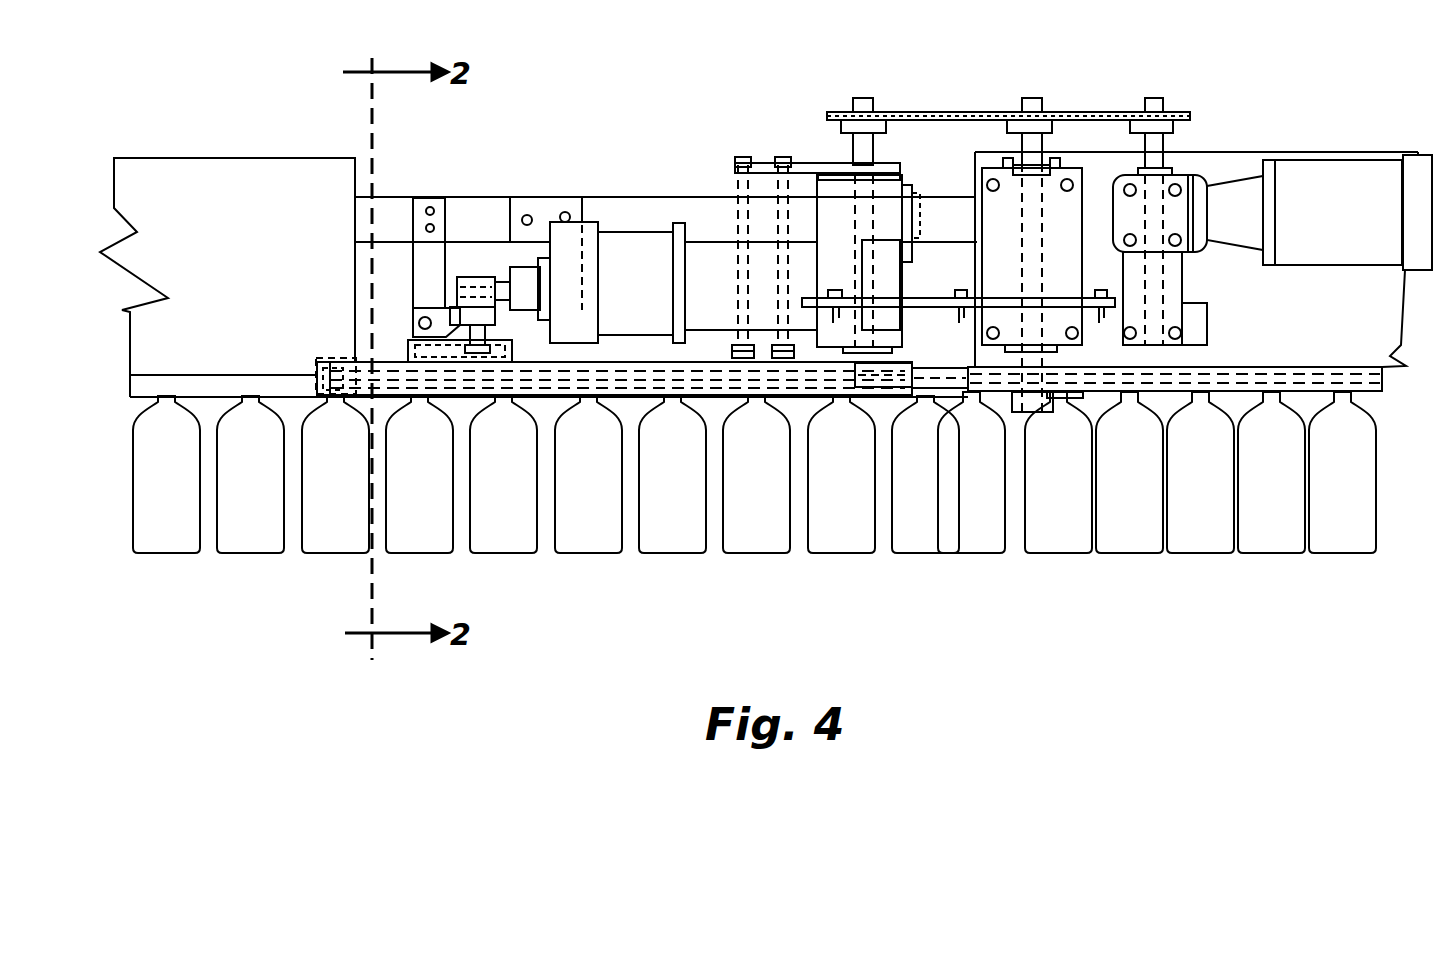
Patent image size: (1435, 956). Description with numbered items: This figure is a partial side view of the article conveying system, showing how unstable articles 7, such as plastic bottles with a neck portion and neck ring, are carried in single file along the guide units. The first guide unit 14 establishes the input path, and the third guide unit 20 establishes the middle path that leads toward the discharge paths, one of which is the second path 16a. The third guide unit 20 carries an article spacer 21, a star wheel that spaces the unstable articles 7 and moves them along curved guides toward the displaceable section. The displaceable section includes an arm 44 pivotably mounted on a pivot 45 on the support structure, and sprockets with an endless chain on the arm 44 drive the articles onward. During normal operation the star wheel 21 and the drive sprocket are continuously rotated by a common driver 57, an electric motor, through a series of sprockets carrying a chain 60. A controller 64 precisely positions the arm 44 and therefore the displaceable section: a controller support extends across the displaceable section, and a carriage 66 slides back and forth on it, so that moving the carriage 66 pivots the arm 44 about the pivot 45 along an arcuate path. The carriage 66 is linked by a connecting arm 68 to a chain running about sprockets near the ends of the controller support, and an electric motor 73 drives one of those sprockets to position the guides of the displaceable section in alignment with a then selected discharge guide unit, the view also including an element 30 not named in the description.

The unstable article 7 is at (840, 535).
The first guide unit 14 is at (1283, 327).
The second path 16a is at (349, 358).
The third guide unit 20 is at (697, 378).
The article spacer 21 is at (1083, 400).
The infeed housing 30 is at (272, 168).
The arm 44 is at (636, 360).
The pivot 45 is at (867, 140).
The common driver 57 is at (1328, 168).
The chain 60 is at (975, 110).
The controller 64 is at (492, 180).
The carriage 66 is at (443, 352).
The connecting arm 68 is at (490, 333).
The electric motor 73 is at (630, 237).